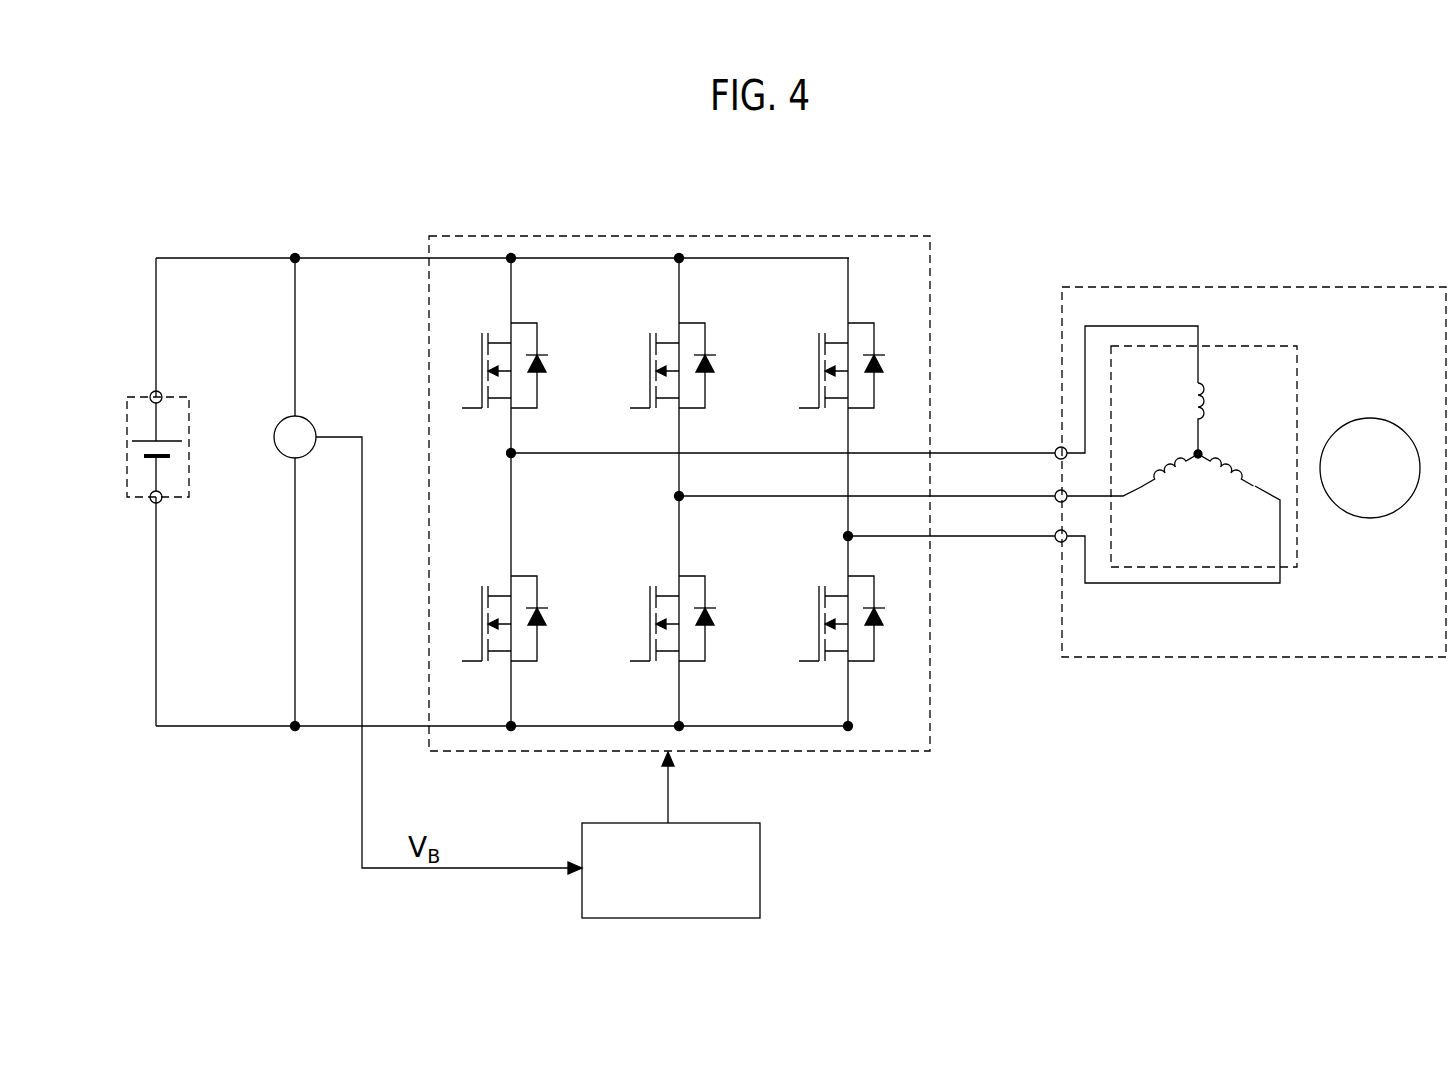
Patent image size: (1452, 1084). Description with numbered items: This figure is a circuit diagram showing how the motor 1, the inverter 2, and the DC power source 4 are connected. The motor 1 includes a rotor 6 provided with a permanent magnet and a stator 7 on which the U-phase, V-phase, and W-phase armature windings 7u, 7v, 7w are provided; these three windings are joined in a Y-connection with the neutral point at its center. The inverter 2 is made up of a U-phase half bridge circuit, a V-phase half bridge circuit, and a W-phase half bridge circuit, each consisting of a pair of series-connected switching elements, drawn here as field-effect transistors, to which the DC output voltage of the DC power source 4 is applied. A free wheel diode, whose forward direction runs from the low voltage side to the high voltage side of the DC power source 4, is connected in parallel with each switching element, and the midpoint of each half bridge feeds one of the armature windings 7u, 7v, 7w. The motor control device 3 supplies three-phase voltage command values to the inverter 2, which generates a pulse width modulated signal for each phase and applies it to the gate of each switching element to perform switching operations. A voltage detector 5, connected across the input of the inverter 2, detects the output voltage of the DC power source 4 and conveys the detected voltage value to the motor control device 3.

The motor 1 is at (1254, 431).
The inverter 2 is at (832, 236).
The motor control device 3 is at (760, 875).
The DC power source 4 is at (191, 447).
The voltage detector 5 is at (311, 422).
The rotor 6 is at (1380, 518).
The stator 7 is at (1227, 479).
The U-phase armature winding 7u is at (1194, 402).
The V-phase armature winding 7v is at (1167, 496).
The W-phase armature winding 7w is at (1237, 496).